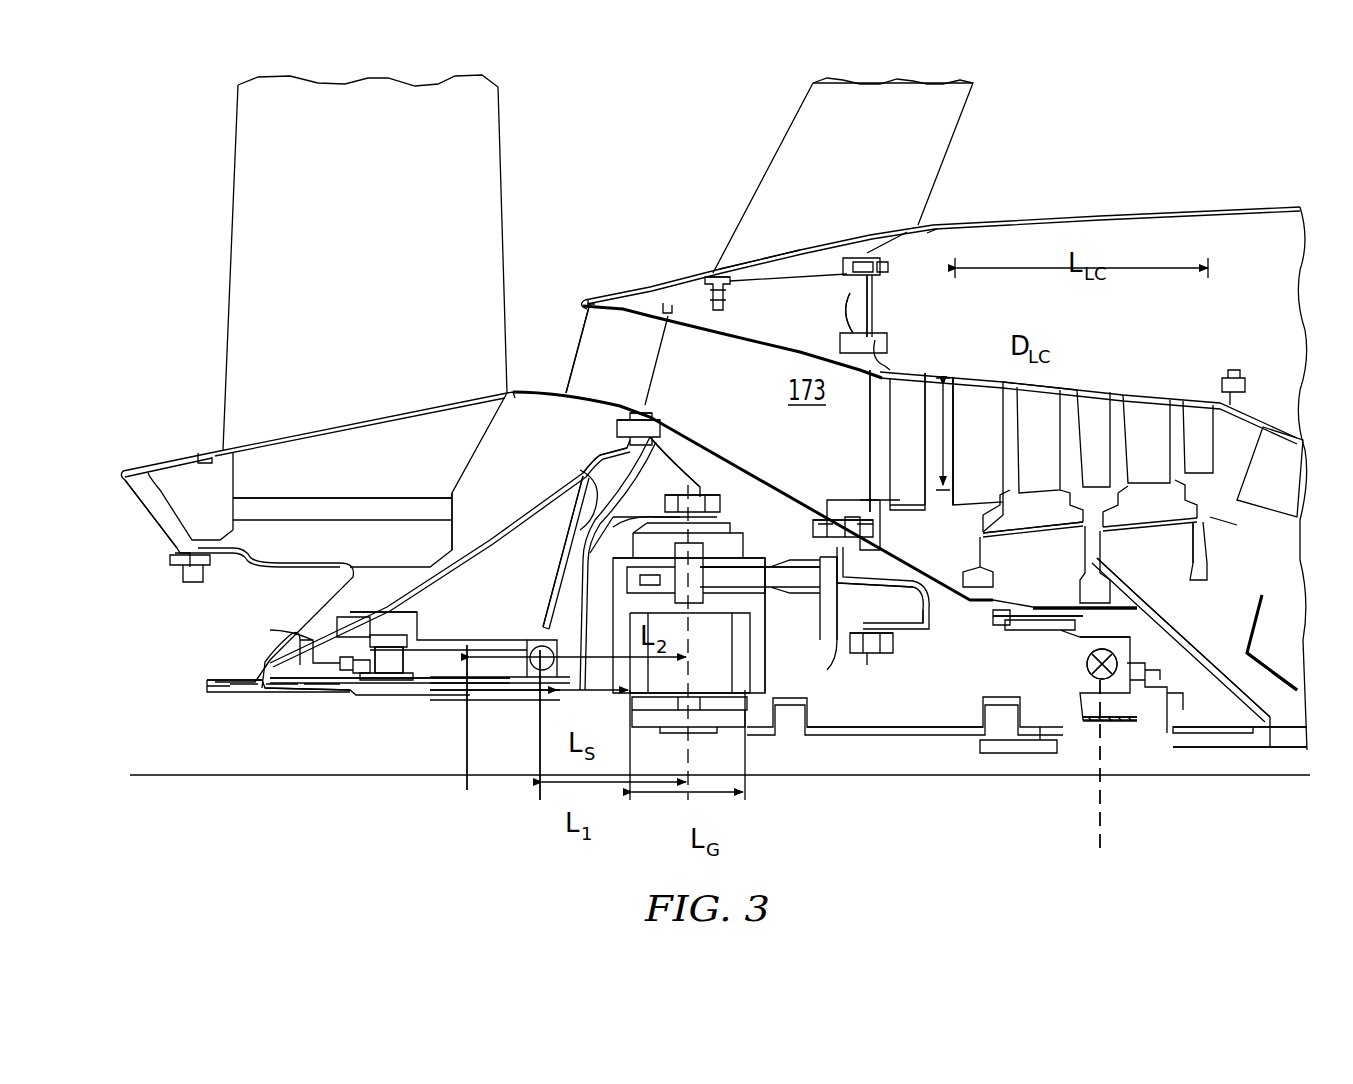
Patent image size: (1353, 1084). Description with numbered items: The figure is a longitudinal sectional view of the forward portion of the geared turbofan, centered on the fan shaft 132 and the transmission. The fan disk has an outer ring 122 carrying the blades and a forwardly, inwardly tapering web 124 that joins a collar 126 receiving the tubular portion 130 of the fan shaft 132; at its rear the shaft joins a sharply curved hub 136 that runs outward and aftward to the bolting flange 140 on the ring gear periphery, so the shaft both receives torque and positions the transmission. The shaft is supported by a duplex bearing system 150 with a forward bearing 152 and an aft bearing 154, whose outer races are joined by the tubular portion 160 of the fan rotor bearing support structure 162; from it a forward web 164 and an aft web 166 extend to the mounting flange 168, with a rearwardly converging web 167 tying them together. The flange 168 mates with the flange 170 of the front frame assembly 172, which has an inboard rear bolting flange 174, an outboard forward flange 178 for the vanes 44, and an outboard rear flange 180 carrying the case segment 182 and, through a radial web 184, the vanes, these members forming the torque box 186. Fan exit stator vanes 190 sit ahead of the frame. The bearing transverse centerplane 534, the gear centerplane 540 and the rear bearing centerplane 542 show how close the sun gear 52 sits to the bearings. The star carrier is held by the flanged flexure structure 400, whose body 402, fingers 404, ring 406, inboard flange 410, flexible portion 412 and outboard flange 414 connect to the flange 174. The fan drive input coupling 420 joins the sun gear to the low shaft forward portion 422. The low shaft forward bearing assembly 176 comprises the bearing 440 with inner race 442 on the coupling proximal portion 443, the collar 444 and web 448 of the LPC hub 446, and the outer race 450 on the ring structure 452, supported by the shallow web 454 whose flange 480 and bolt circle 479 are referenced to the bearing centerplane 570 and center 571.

The vanes 44 is at (937, 125).
The sun gear 52 is at (650, 718).
The outer ring 122 is at (277, 573).
The web 124 is at (300, 630).
The collar 126 is at (283, 685).
The tubular portion 130 is at (352, 692).
The fan shaft 132 is at (479, 704).
The hub 136 is at (527, 603).
The bolting flange 140 is at (638, 419).
The duplex bearing system 150 is at (452, 684).
The forward bearing 152 is at (386, 655).
The aft bearing 154 is at (538, 662).
The tubular radially inboard portion 160 is at (437, 612).
The fan rotor bearing support structure 162 is at (490, 513).
The forward web 164 is at (485, 537).
The aft web 166 is at (582, 470).
The rearwardly converging web 167 is at (497, 585).
The mounting flange 168 is at (635, 461).
The mating flange 170 is at (634, 414).
The front frame assembly 172 is at (668, 447).
The inboard rear bolting flange 174 is at (855, 508).
The low shaft forward bearing assembly 176 is at (1040, 663).
The outboard forward mounting flange 178 is at (718, 310).
The outboard rear mounting flange 180 is at (874, 300).
The engine case segment 182 is at (1048, 382).
The radial web 184 is at (882, 322).
The torque box 186 is at (800, 305).
The fan exit stator vanes 190 is at (616, 345).
The flanged flexure structure 400 is at (920, 648).
The body 402 is at (876, 578).
The fingers 404 is at (787, 585).
The ring 406 is at (827, 625).
The inboard flange 410 is at (875, 658).
The flexible portion 412 is at (988, 580).
The outboard flange 414 is at (826, 517).
The fan drive input coupling 420 is at (848, 747).
The forward portion 422 is at (1128, 778).
The bearing 440 is at (1095, 705).
The inner race 442 is at (1210, 680).
The proximal portion 443 is at (1160, 738).
The collar 444 is at (1177, 727).
The hub 446 is at (1216, 630).
The web 448 is at (1206, 558).
The outer race 450 is at (1107, 643).
The ring structure 452 is at (1062, 618).
The web 454 is at (950, 545).
The forward bolt circle 479 is at (875, 500).
The flange 480 is at (913, 505).
The bearing transverse centerplane 534 is at (453, 782).
The centerplane 540 is at (740, 682).
The centerplane 542 is at (540, 762).
The centerplane 570 is at (1100, 822).
The center 571 is at (1093, 677).